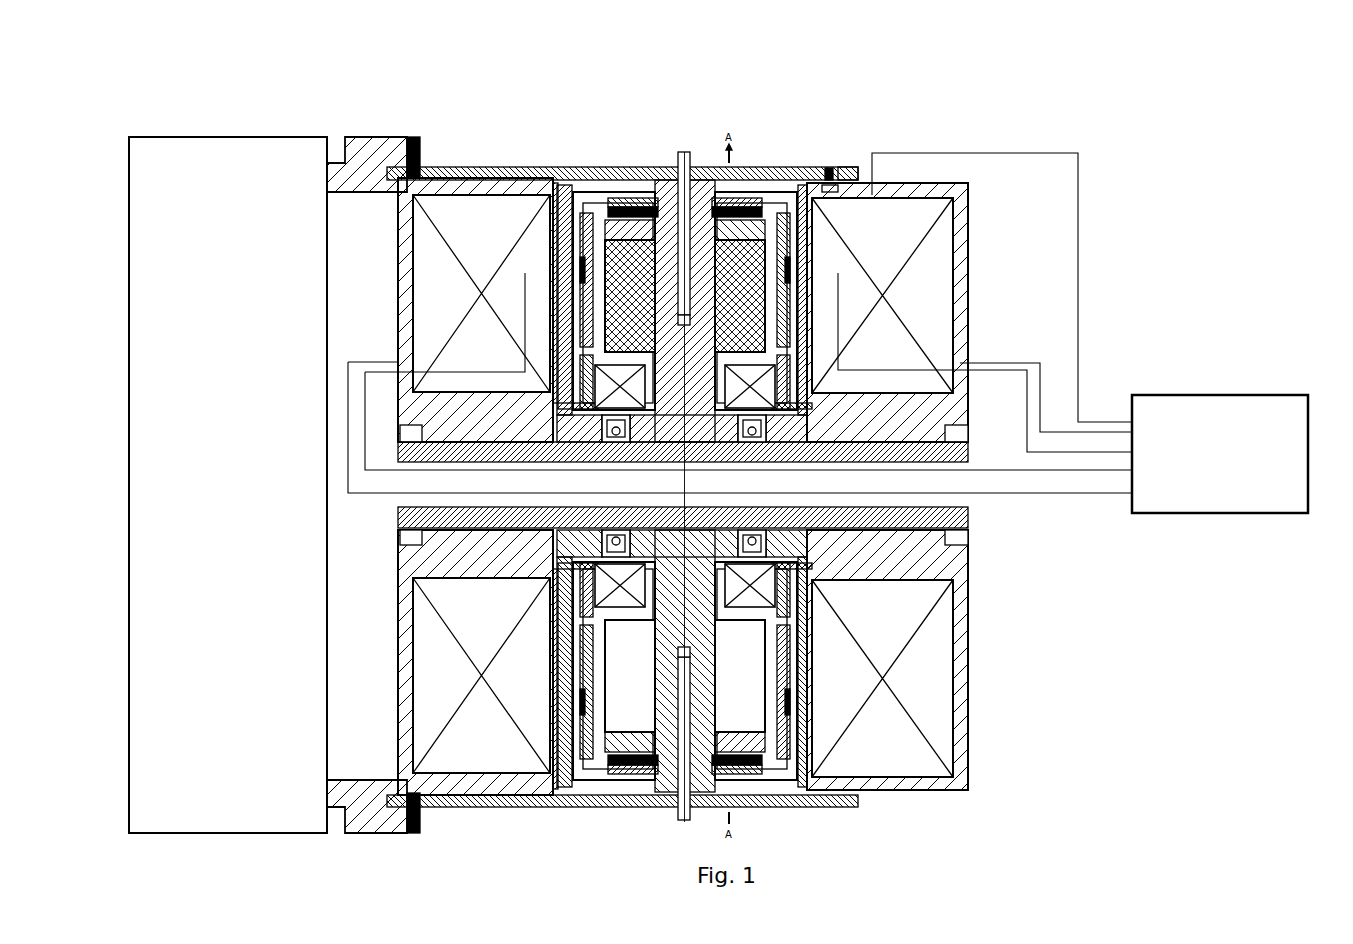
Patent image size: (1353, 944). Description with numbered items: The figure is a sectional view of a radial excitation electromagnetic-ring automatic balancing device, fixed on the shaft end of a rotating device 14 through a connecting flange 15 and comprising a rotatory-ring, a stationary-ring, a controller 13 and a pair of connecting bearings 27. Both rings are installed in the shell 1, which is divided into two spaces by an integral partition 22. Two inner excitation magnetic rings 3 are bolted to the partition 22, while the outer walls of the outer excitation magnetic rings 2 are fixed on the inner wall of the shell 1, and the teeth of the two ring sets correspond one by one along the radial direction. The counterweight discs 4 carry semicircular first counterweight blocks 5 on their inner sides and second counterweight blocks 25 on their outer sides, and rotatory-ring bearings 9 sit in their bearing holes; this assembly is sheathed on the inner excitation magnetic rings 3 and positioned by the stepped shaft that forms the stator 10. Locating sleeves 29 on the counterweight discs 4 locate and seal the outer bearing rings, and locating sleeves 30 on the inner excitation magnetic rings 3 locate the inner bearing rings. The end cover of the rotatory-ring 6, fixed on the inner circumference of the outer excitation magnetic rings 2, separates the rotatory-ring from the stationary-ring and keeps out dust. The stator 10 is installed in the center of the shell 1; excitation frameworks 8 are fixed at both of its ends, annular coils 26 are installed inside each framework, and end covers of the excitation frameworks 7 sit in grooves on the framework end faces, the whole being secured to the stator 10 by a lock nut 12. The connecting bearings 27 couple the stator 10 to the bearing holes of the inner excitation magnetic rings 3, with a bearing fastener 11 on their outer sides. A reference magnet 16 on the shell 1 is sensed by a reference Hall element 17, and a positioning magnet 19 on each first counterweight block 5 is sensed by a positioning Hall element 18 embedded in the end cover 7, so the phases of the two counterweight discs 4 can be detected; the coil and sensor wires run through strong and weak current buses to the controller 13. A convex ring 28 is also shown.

The shell 1 is at (436, 166).
The outer excitation magnetic rings 2 is at (573, 192).
The inner excitation magnetic rings 3 is at (686, 190).
The counterweight discs 4 is at (617, 193).
The first counterweight blocks 5 is at (604, 205).
The end cover of the rotatory-ring 6 is at (588, 198).
The end covers of the excitation frameworks 7 is at (558, 195).
The excitation frameworks 8 is at (501, 188).
The rotatory-ring bearings 9 is at (788, 195).
The stator 10 is at (968, 535).
The bearing fastener 11 is at (803, 560).
The lock nut 12 is at (965, 430).
The controller 13 is at (1208, 452).
The rotating device 14 is at (188, 150).
The connecting flange 15 is at (360, 148).
The reference magnet 16 is at (831, 172).
The reference Hall element 17 is at (856, 172).
The positioning Hall element 18 is at (862, 195).
The positioning magnet 19 is at (811, 186).
The partition 22 is at (712, 188).
The second counterweight blocks 25 is at (660, 193).
The coils 26 is at (457, 227).
The connecting bearings 27 is at (808, 570).
The convex ring 28 is at (735, 188).
The locating sleeves of outer rings of rotatory-ring bearings 29 is at (812, 630).
The locating sleeves of inner rings of rotatory-ring bearings 30 is at (812, 580).